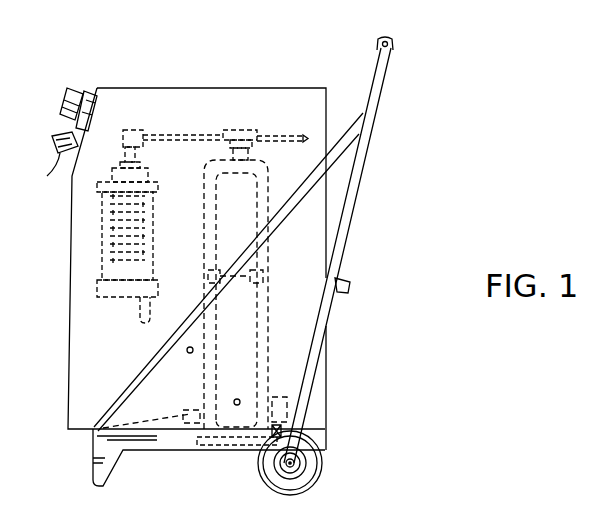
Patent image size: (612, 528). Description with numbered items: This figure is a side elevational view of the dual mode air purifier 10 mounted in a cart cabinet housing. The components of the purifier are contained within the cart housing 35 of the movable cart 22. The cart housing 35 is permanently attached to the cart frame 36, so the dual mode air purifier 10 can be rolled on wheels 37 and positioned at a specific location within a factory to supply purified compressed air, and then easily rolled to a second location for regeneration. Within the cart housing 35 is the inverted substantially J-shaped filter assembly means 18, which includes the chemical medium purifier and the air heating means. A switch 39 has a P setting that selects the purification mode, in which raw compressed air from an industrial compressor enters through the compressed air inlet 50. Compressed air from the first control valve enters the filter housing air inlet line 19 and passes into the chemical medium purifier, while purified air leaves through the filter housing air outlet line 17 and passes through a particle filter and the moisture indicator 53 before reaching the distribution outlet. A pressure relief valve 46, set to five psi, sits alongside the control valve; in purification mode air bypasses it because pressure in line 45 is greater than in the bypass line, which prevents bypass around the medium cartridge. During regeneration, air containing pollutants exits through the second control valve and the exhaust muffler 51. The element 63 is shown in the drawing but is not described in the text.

The dual mode air purifier 10 is at (200, 118).
The filter housing air outlet line 17 is at (267, 132).
The inverted substantially J-shaped filter assembly means 18 is at (270, 236).
The filter housing air inlet line 19 is at (306, 402).
The movable cart 22 is at (487, 35).
The cart housing 35 is at (190, 176).
The cart frame 36 is at (162, 442).
The wheels 37 is at (322, 482).
The switch 39 is at (50, 154).
The line 45 is at (140, 316).
The pressure relief valve 46 is at (66, 101).
The compressed air inlet 50 is at (241, 400).
The exhaust muffler 51 is at (190, 353).
The moisture indicator 53 is at (98, 100).
The bottom panel line 63 is at (82, 428).